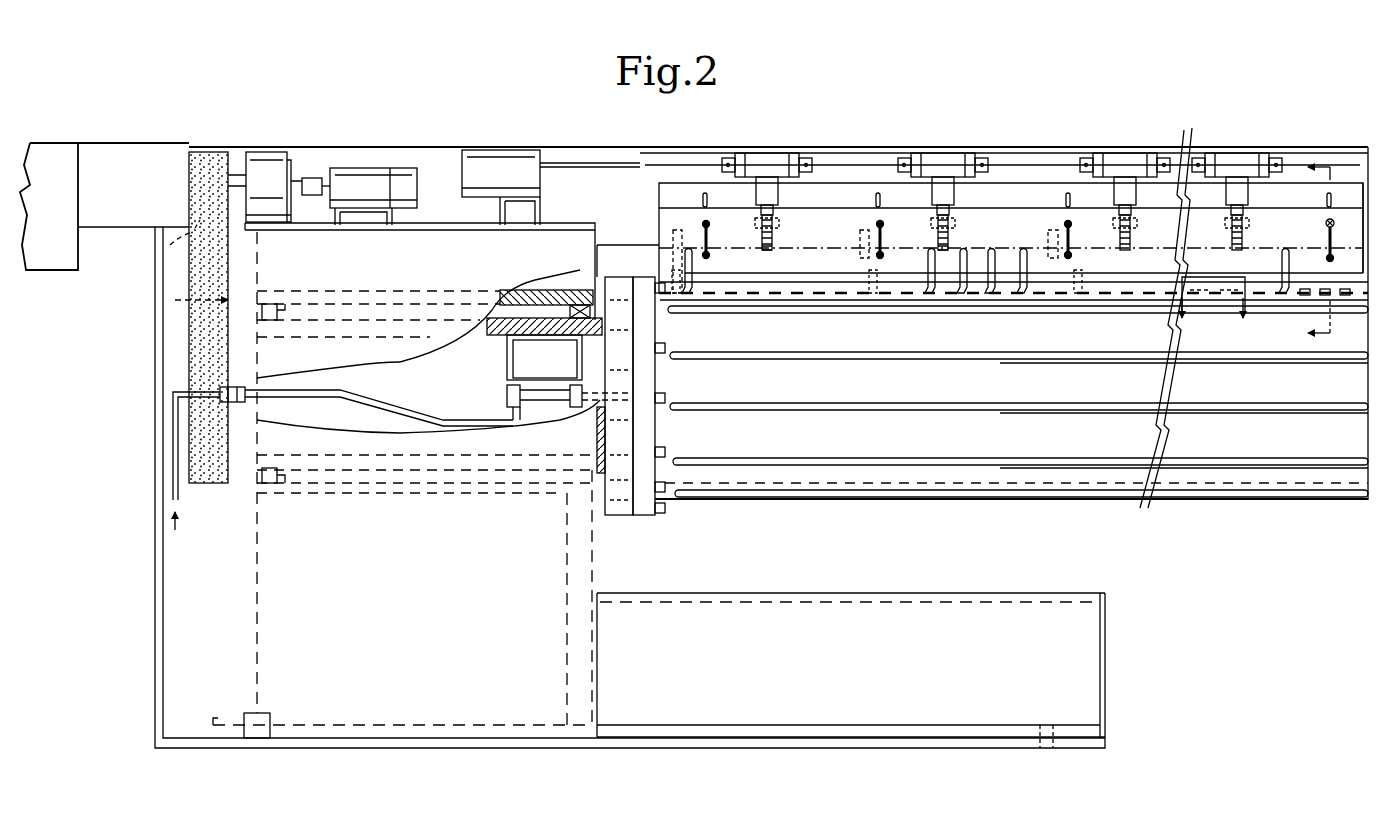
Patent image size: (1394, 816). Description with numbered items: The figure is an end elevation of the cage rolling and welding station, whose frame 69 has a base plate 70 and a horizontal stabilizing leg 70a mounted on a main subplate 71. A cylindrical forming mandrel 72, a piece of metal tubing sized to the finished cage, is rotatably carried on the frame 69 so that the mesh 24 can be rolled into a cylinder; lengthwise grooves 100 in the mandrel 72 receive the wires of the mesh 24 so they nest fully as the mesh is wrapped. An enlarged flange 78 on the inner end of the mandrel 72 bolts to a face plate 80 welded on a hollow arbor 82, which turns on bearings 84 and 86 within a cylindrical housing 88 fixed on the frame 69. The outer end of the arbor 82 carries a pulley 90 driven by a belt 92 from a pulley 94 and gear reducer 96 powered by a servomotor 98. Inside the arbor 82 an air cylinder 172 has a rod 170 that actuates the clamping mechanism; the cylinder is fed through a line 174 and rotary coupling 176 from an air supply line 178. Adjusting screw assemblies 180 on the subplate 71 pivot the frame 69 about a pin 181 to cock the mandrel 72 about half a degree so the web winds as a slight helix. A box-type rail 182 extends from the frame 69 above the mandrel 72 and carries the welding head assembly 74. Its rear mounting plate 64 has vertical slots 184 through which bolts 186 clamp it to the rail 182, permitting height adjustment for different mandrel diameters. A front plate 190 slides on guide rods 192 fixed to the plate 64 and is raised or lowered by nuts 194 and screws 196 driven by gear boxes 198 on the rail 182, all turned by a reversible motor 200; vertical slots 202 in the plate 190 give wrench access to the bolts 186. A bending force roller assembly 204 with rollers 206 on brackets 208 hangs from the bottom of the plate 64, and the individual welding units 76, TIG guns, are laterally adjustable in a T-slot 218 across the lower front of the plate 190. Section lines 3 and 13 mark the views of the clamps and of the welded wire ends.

The section line 3- 3 is at (1310, 250).
The section line 13- 13 is at (1213, 322).
The mesh 24 is at (812, 313).
The rear mounting plate 64 is at (1342, 190).
The frame 69 is at (429, 607).
The base plate 70 is at (812, 725).
The horizontal stabilizing leg 70a is at (930, 607).
The main subplate 71 is at (855, 746).
The cylindrical forming mandrel 72 is at (1195, 505).
The welding head assembly 74 is at (1346, 235).
The welding units 76 is at (692, 272).
The enlarged flange 78 is at (645, 517).
The face plate 80 is at (618, 517).
The hollow arbor 82 is at (492, 337).
The bearing 84 is at (578, 305).
The bearing 86 is at (277, 305).
The cylindrical housing 88 is at (537, 292).
The pulley 90 is at (175, 300).
The belt 92 is at (190, 262).
The pulley 94 is at (170, 245).
The gear reducer 96 is at (283, 158).
The servomotor 98 is at (365, 168).
The grooves 100 is at (995, 354).
The rod 170 is at (592, 400).
The air cylinder 172 is at (537, 390).
The line 174 is at (393, 402).
The rotary coupling 176 is at (245, 388).
The air supply line 178 is at (172, 488).
The adjusting screw assemblies 180 is at (262, 737).
The pin 181 is at (1068, 750).
The box-type rail 182 is at (678, 153).
The vertical slots 184 is at (707, 200).
The bolts 186 is at (1326, 226).
The front plate 190 is at (665, 210).
The guide rods 192 is at (672, 240).
The nuts 194 is at (780, 224).
The screws 196 is at (770, 252).
The gear boxes 198 is at (772, 155).
The reversible motor 200 is at (511, 150).
The vertical slots 202 is at (710, 240).
The bending force roller assembly 204 is at (1325, 280).
The rollers 206 is at (852, 301).
The brackets 208 is at (671, 276).
The T-slot 218 is at (1200, 277).